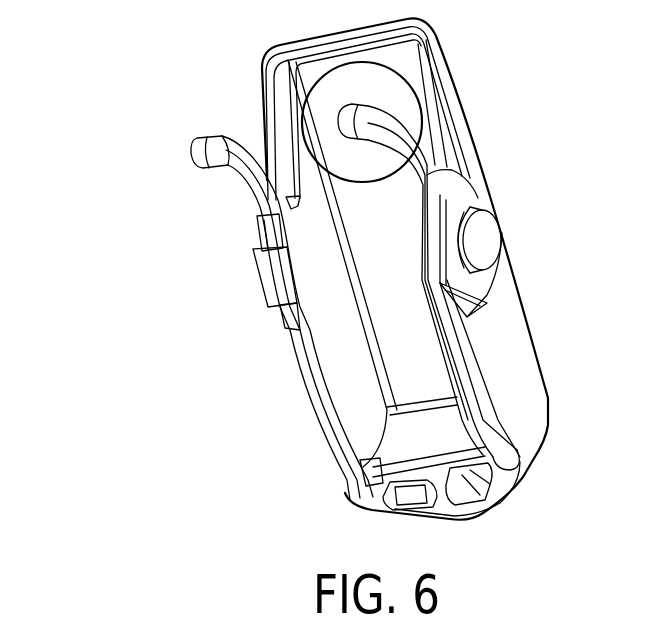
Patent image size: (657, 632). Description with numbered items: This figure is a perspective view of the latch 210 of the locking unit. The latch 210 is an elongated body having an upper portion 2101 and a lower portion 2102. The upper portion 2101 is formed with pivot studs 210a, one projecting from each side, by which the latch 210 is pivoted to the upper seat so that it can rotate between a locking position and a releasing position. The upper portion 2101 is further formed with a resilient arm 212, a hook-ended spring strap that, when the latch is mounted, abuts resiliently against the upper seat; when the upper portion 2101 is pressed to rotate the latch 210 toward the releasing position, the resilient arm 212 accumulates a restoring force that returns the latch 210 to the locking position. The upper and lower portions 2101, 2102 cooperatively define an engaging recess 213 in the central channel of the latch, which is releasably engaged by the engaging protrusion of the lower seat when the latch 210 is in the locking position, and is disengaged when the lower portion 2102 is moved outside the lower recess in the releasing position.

The latch 210 is at (77, 65).
The upper portion 2101 is at (458, 105).
The lower portion 2102 is at (437, 490).
The pivot studs 210a is at (253, 266).
The resilient arm 212 is at (350, 116).
The engaging recess 213 is at (423, 438).